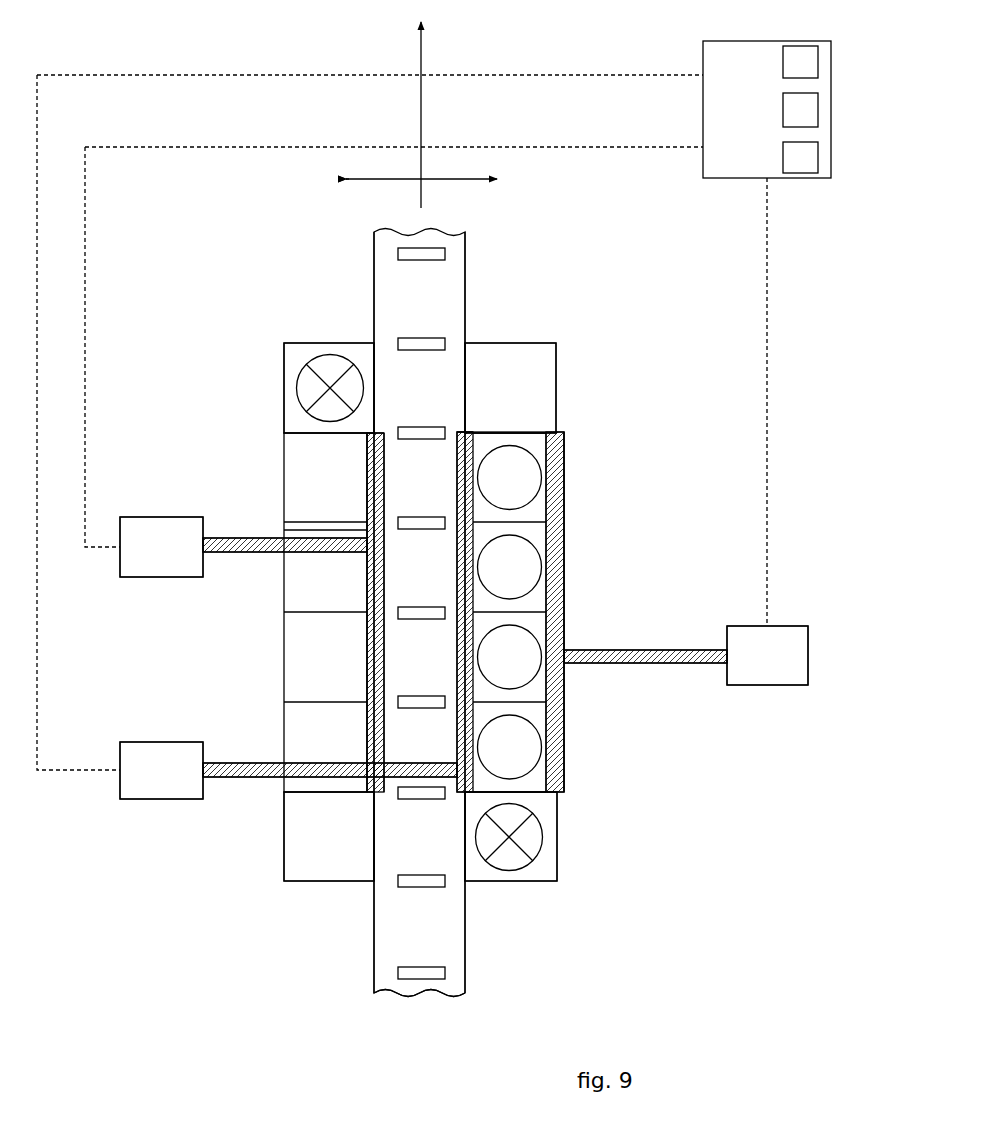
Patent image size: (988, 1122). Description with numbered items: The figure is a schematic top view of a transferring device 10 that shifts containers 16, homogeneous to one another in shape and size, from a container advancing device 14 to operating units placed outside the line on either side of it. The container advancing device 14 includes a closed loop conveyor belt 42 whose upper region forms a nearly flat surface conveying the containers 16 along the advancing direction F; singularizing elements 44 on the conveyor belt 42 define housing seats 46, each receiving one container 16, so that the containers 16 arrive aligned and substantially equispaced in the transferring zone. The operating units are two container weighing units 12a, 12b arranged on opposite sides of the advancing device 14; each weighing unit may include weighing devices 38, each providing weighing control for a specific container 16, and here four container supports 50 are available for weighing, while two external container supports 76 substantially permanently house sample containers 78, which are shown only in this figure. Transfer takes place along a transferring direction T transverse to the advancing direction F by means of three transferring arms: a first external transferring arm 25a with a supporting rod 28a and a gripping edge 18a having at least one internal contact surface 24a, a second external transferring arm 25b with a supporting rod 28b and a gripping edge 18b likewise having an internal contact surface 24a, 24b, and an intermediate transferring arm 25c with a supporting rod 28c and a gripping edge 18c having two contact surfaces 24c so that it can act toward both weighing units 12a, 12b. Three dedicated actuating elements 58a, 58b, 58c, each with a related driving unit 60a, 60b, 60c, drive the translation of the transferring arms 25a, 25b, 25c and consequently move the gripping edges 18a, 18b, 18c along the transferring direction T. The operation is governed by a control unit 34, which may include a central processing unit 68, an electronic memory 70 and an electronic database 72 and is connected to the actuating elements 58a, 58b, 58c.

The transferring device 10 is at (672, 478).
The container weighing unit 12a is at (238, 460).
The container weighing unit 12b is at (582, 578).
The container advancing device 14 is at (456, 997).
The containers 16 is at (516, 478).
The gripping edge 18a is at (376, 670).
The gripping edge 18b is at (557, 458).
The gripping edge 18c is at (463, 576).
The internal contact surface 24a is at (384, 467).
The bar side edge 24b is at (365, 502).
The contact surfaces 24c is at (455, 443).
The first external transferring arm 25a is at (240, 761).
The second external transferring arm 25b is at (693, 648).
The intermediate transferring arm 25c is at (232, 537).
The supporting rod 28a is at (263, 773).
The supporting rod 28b is at (637, 660).
The supporting rod 28c is at (233, 549).
The control unit 34 is at (731, 158).
The weighing devices 38 is at (561, 369).
The conveyor belt 42 is at (452, 939).
The singularizing elements 44 is at (428, 702).
The housing seats 46 is at (406, 654).
The container supports 50 is at (302, 455).
The actuating element 58a is at (128, 805).
The actuating element 58b is at (806, 625).
The actuating element 58c is at (148, 514).
The driving unit 60a is at (168, 786).
The driving unit 60b is at (766, 664).
The driving unit 60c is at (168, 560).
The central processing unit 68 is at (801, 57).
The electronic memory 70 is at (800, 110).
The electronic database 72 is at (803, 159).
The external container supports 76 is at (297, 358).
The sample containers 78 is at (330, 385).
The advancing direction F is at (424, 50).
The transferring direction T is at (468, 182).